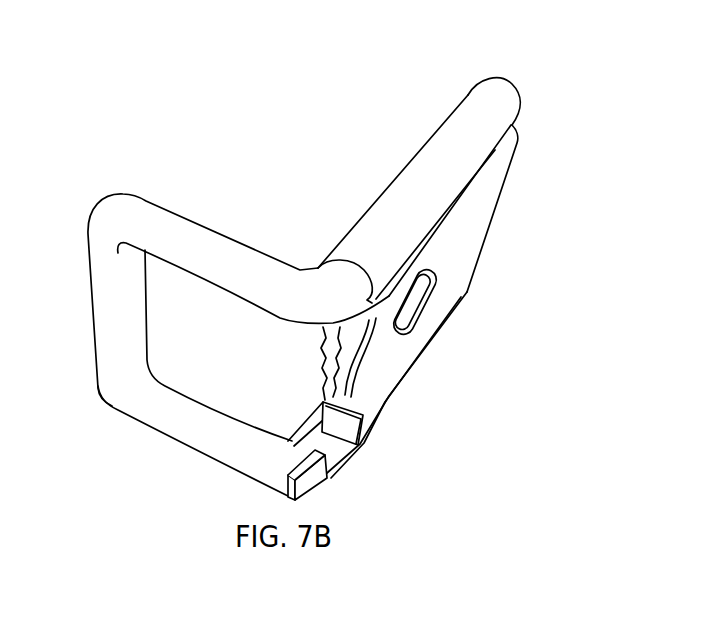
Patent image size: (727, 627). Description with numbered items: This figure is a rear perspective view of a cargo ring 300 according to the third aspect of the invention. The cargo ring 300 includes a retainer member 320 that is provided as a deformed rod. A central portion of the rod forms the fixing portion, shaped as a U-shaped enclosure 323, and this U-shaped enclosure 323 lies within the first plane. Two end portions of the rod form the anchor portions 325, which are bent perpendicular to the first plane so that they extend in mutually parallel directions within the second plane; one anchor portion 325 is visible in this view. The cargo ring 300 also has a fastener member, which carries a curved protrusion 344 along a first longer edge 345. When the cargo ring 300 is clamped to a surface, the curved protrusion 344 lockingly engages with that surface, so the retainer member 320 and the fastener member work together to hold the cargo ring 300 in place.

The cargo ring 300 is at (291, 86).
The retainer member 320 is at (190, 242).
The U-shaped enclosure 323 is at (263, 361).
The anchor portion 325 is at (417, 205).
The curved protrusion 344 is at (347, 423).
The first longer edge 345 is at (322, 358).